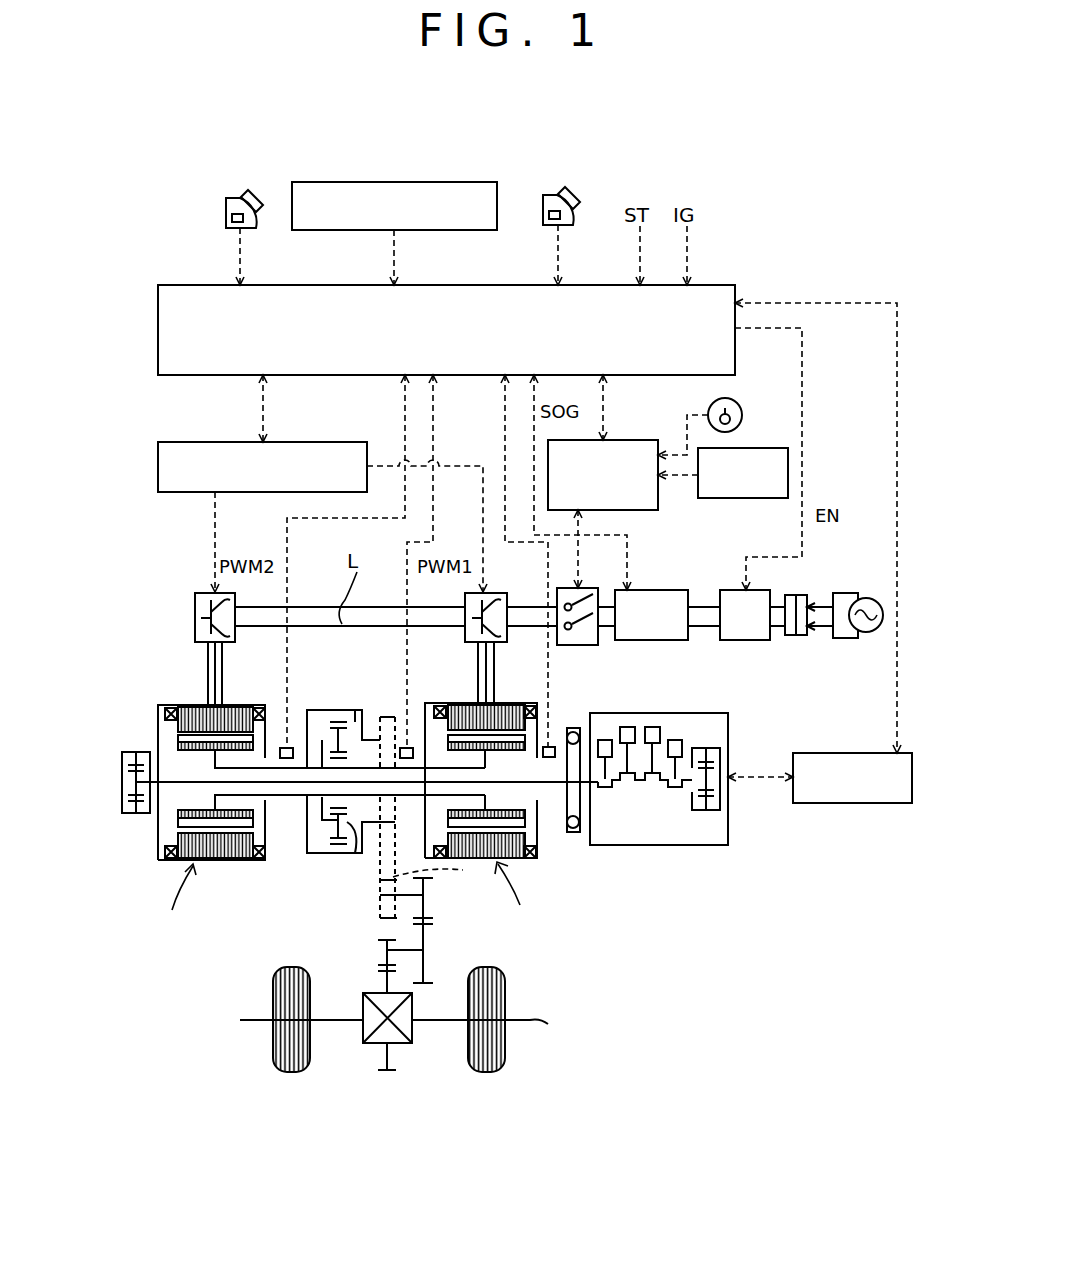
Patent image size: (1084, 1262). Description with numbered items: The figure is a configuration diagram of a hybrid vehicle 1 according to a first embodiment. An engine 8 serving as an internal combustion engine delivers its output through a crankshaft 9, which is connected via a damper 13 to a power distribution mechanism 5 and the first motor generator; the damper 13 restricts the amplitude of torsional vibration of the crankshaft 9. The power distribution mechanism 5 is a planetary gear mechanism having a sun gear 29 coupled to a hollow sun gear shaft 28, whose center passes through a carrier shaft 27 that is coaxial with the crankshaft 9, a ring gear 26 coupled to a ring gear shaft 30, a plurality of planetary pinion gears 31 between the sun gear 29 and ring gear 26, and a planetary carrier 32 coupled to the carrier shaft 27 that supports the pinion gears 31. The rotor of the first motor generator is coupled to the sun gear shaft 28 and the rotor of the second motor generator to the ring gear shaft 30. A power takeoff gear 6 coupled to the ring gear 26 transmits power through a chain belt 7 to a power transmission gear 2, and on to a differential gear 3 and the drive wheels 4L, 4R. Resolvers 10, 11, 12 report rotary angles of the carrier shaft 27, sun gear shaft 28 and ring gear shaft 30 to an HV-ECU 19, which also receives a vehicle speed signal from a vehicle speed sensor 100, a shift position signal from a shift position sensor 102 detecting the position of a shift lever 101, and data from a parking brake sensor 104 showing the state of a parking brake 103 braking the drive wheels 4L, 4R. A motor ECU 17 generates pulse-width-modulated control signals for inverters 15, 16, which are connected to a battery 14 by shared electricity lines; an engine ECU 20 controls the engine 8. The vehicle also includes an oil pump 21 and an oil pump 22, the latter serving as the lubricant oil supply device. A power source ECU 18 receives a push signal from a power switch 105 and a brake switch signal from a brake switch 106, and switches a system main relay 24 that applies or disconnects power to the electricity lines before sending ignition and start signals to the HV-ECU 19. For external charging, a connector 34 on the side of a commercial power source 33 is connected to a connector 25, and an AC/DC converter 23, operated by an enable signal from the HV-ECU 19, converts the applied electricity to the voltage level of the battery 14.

The hybrid vehicle 1 is at (812, 252).
The power transmission gear 2 is at (447, 922).
The differential gear 3 is at (371, 1043).
The drive wheel 4L is at (280, 1019).
The drive wheel 4R is at (498, 1019).
The power distribution mechanism 5 is at (313, 858).
The power takeoff gear 6 is at (386, 717).
The chain belt 7 is at (436, 874).
The engine 8 is at (696, 713).
The crankshaft 9 is at (640, 786).
The resolver 10 is at (552, 745).
The resolver 11 is at (409, 746).
The resolver 12 is at (286, 746).
The damper 13 is at (574, 833).
The battery 14 is at (670, 590).
The inverter 15 is at (497, 593).
The inverter 16 is at (200, 593).
The motor electronic control unit 17 is at (314, 442).
The power source ECU 18 is at (628, 440).
The HV-ECU 19 is at (187, 285).
The engine ECU 20 is at (815, 753).
The oil pump 21 is at (703, 810).
The oil pump 22 is at (128, 813).
The AC/DC converter 23 is at (746, 640).
The system main relay 24 is at (588, 590).
The connector 25 is at (794, 640).
The ring gear 26 is at (348, 708).
The carrier shaft 27 is at (413, 797).
The sun gear shaft 28 is at (386, 857).
The sun gear 29 is at (344, 858).
The ring gear shaft 30 is at (298, 798).
The planetary pinion gear 31 is at (345, 738).
The planetary carrier 32 is at (322, 740).
The commercial power source 33 is at (862, 598).
The connector 34 is at (806, 640).
The vehicle speed sensor 100 is at (436, 182).
The shift lever 101 is at (578, 198).
The shift position sensor 102 is at (555, 193).
The parking brake 103 is at (255, 200).
The parking brake sensor 104 is at (240, 195).
The power switch 105 is at (737, 400).
The brake switch 106 is at (750, 448).